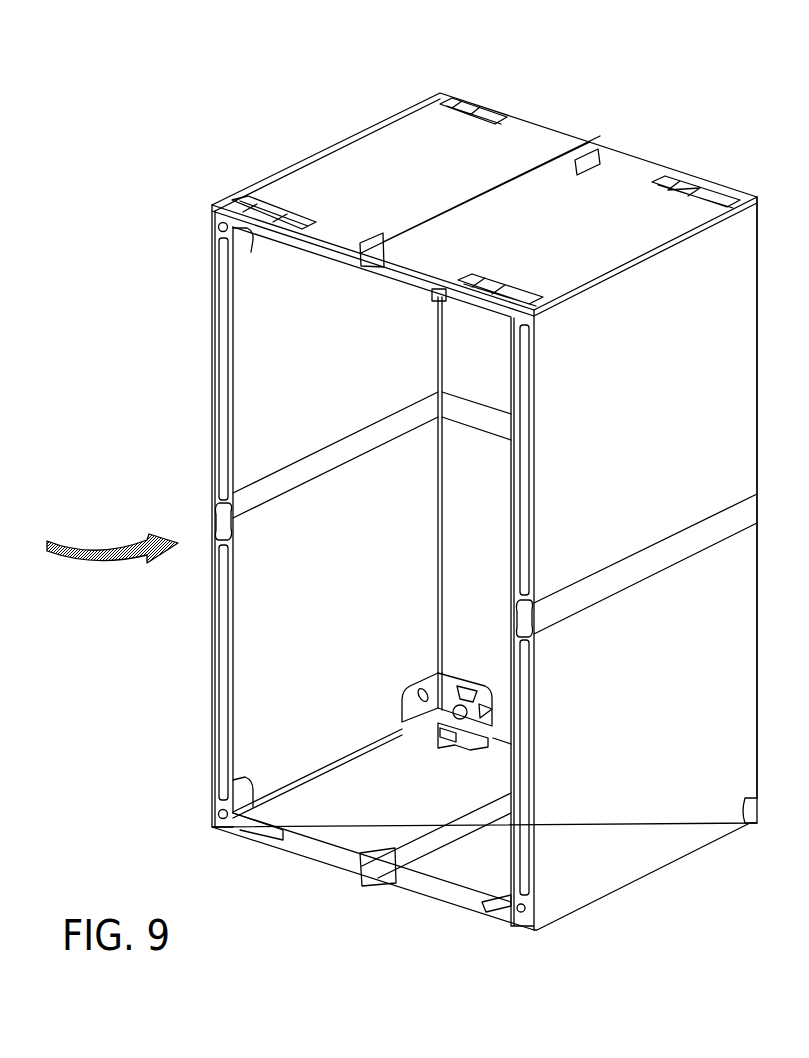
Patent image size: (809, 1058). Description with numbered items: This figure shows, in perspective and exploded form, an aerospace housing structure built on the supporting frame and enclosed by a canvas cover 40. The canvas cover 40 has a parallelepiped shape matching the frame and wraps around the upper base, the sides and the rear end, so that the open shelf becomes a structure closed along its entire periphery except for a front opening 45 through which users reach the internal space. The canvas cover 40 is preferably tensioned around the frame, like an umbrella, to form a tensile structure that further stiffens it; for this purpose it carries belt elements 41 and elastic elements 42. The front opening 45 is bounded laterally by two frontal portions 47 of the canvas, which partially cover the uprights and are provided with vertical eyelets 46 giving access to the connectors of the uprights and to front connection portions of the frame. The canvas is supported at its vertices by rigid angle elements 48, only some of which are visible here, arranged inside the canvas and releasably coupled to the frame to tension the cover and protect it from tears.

The canvas cover 40 is at (636, 153).
The belt elements 41 is at (287, 212).
The elastic elements 42 is at (510, 186).
The front opening 45 is at (413, 300).
The vertical eyelets 46 is at (218, 296).
The frontal portions 47 is at (513, 497).
The rigid angle elements 48 is at (238, 230).